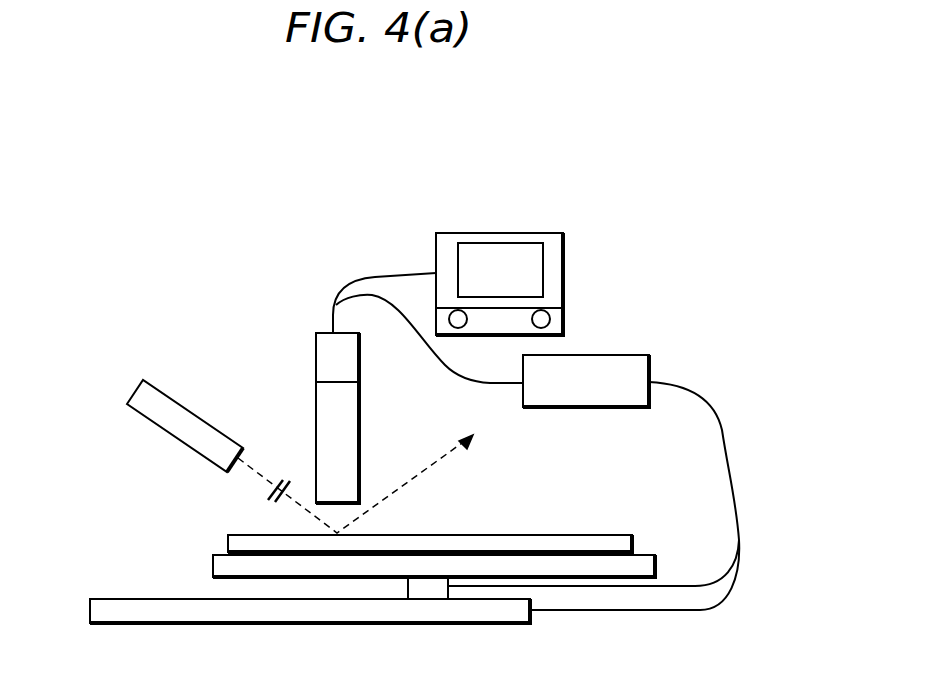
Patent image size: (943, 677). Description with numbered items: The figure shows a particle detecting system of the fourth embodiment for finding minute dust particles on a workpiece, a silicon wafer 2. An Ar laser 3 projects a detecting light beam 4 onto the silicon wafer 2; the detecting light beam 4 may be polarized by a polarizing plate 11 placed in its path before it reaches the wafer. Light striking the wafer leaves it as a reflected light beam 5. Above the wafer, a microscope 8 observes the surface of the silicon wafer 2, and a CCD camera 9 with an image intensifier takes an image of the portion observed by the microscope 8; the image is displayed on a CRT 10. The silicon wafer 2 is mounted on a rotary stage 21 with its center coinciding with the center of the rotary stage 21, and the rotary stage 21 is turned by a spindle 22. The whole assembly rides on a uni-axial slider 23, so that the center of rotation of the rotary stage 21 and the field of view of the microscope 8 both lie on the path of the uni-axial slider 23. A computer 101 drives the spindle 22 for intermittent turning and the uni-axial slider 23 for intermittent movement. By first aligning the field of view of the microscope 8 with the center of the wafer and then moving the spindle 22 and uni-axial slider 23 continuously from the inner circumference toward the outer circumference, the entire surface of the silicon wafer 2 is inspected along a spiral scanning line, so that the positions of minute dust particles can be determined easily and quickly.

The workpiece (silicon wafer) 2 is at (632, 544).
The Ar laser 3 is at (188, 450).
The detecting light beam 4 is at (310, 511).
The reflected light beam 5 is at (412, 482).
The microscope 8 is at (316, 445).
The CCD camera 9 is at (316, 357).
The CRT 10 is at (563, 276).
The polarizing plate 11 is at (268, 493).
The rotary stage 21 is at (213, 565).
The spindle 22 is at (408, 588).
The uni-axial slider 23 is at (117, 603).
The computer 101 is at (649, 366).